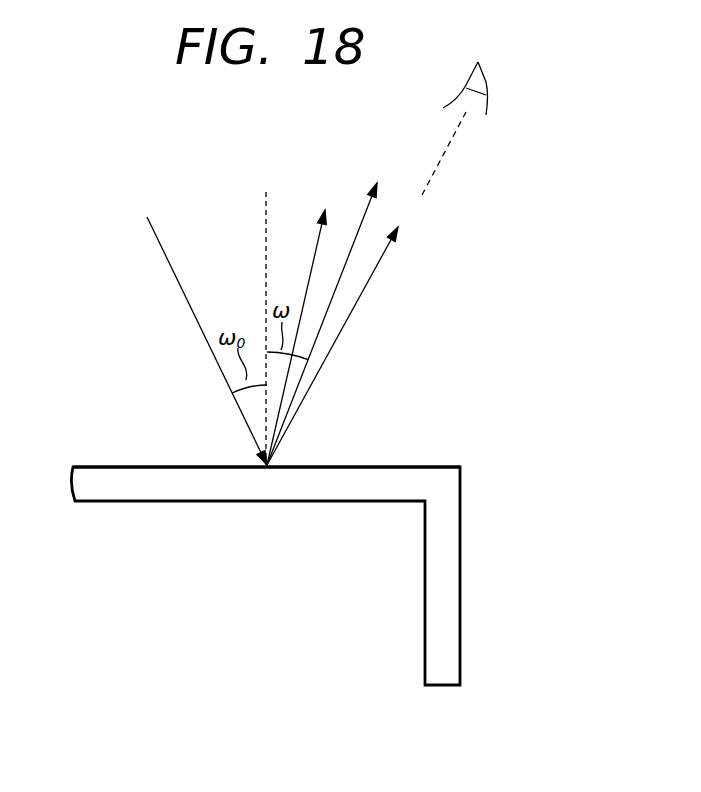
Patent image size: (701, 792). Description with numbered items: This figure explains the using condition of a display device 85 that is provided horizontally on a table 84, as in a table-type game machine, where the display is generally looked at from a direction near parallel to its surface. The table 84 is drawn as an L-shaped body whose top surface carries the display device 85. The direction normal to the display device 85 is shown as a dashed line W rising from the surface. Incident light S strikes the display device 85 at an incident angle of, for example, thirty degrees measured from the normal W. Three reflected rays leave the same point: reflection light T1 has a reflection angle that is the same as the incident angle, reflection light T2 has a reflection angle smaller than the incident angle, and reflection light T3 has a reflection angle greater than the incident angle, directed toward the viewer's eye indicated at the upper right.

The table 84 is at (462, 572).
The display device 85 is at (372, 466).
The incident light S is at (203, 327).
The direction normal to the display device W is at (267, 316).
The reflection light T1 is at (329, 310).
The reflection light T2 is at (305, 323).
The reflection light T3 is at (366, 288).